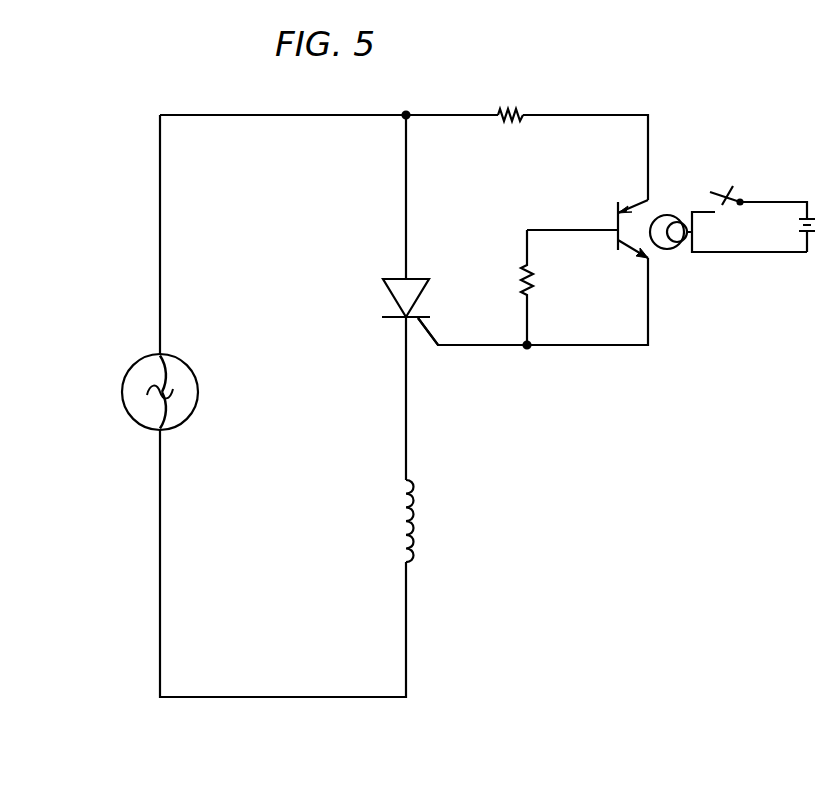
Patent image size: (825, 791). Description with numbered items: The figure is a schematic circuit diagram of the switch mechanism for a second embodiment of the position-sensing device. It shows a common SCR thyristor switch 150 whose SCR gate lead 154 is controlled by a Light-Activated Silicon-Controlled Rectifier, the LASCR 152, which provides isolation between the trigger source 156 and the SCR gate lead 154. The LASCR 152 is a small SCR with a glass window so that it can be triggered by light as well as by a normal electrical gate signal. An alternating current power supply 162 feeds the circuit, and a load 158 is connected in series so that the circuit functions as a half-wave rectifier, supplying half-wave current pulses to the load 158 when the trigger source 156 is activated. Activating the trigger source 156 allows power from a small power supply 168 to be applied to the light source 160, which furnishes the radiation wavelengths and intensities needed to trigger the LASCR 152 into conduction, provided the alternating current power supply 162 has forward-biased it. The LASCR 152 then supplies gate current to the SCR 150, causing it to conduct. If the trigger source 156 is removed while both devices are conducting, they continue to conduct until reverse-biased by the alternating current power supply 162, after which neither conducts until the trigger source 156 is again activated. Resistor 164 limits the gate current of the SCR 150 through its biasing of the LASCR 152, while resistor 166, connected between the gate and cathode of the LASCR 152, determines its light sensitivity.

The SCR thyristor switch 150 is at (397, 277).
The Light-Activated Silicon-Controlled Rectifier (LASCR) 152 is at (615, 223).
The SCR gate lead 154 is at (436, 346).
The trigger source 156 is at (755, 178).
The load 158 is at (413, 505).
The light source 160 is at (676, 249).
The alternating current power supply 162 is at (198, 387).
The resistor 164 is at (516, 114).
The resistor 166 is at (522, 290).
The power supply 168 is at (801, 222).